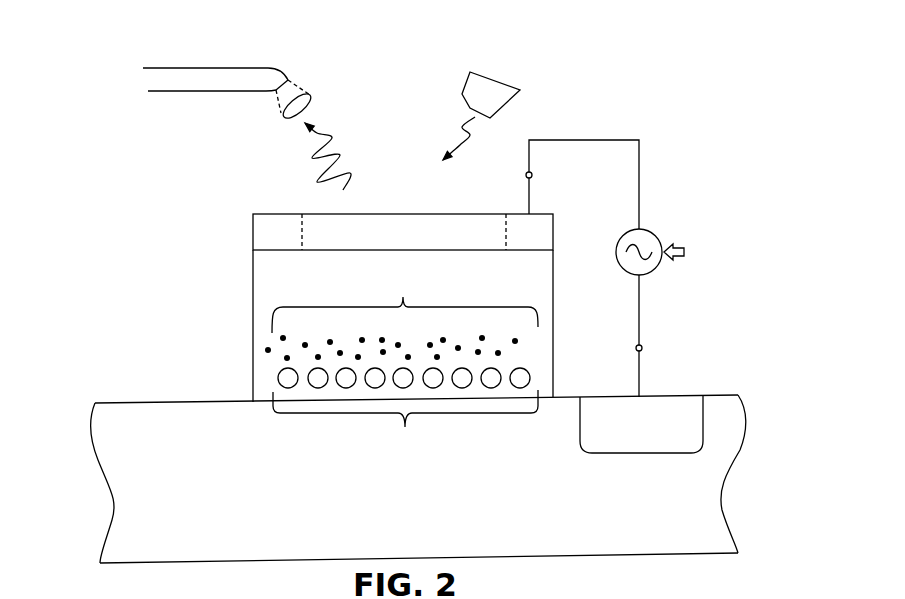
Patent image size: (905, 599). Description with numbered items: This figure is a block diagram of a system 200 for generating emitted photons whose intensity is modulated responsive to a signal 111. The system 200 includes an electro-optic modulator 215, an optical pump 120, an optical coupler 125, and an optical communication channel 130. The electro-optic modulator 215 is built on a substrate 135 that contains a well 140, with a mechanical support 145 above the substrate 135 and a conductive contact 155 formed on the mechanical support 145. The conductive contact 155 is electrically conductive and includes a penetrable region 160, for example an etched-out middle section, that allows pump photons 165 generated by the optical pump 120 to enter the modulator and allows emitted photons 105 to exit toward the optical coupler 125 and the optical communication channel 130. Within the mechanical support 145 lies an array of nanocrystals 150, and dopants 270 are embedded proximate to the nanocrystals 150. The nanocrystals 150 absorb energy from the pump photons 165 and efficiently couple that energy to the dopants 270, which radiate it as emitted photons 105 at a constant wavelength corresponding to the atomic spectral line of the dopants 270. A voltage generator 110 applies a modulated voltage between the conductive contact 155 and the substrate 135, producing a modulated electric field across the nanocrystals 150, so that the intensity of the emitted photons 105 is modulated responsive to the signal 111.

The system 200 is at (690, 47).
The electro-optic modulator 215 is at (84, 238).
The optical communication channel 130 is at (196, 68).
The optical coupler 125 is at (310, 92).
The emitted photons 105 is at (343, 138).
The optical pump 120 is at (504, 92).
The pump photons 165 is at (455, 144).
The penetrable region 160 is at (397, 218).
The conductive contact 155 is at (258, 232).
The mechanical support 145 is at (255, 290).
The dopants 270 is at (401, 314).
The array of nanocrystals 150 is at (405, 410).
The substrate 135 is at (641, 537).
The well 140 is at (688, 394).
The voltage generator 110 is at (658, 271).
The signal 111 is at (684, 249).